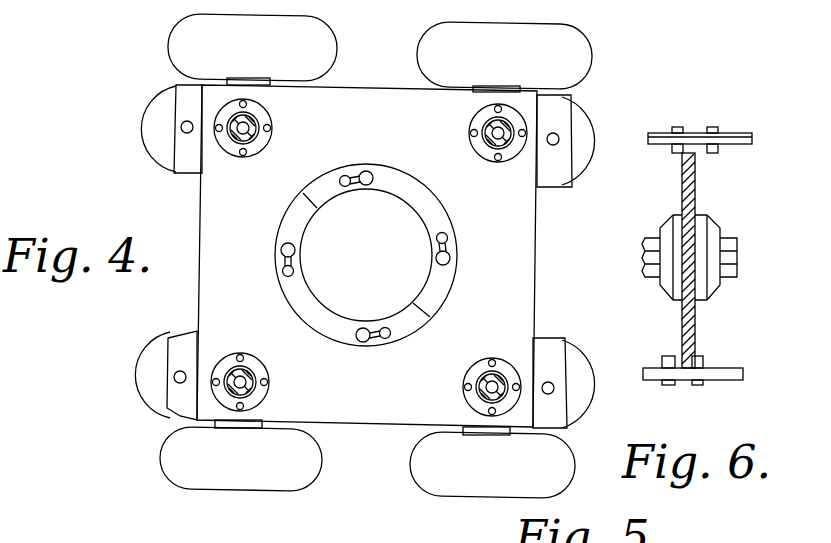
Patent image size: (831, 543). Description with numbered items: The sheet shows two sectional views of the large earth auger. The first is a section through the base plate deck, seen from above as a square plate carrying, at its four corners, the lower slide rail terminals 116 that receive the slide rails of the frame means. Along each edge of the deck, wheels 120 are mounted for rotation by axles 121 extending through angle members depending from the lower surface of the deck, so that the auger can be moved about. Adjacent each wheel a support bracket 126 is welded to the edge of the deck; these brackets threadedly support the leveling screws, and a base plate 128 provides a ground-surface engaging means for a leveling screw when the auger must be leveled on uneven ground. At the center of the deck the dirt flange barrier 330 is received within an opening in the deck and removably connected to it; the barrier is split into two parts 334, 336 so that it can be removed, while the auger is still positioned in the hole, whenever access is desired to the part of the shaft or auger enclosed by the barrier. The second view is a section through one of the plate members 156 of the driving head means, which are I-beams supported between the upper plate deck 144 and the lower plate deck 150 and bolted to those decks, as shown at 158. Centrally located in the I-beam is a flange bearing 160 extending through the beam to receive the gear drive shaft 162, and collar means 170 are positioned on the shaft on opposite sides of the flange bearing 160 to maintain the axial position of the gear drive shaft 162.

In FIG. 4, the lower slide rail terminals 116 is at (262, 140).
In FIG. 4, the wheels 120 is at (578, 63).
In FIG. 4, the axles 121 is at (303, 432).
In FIG. 4, the support brackets 126 is at (563, 182).
In FIG. 4, the base plate 128 is at (580, 370).
In FIG. 4, the dirt flange barrier 330 is at (316, 321).
In FIG. 4, the first part of dirt flange barrier 334 is at (407, 333).
In FIG. 4, the second part of dirt flange barrier 336 is at (443, 291).
In FIG. 6, the upper plate deck 144 is at (736, 136).
In FIG. 6, the lower plate deck 150 is at (720, 376).
In FIG. 6, the plate members 156 is at (692, 332).
In FIG. 6, the bolts 158 is at (670, 383).
In FIG. 6, the flange bearing 160 is at (703, 232).
In FIG. 6, the gear drive shaft 162 is at (737, 268).
In FIG. 6, the collar means 170 is at (737, 243).